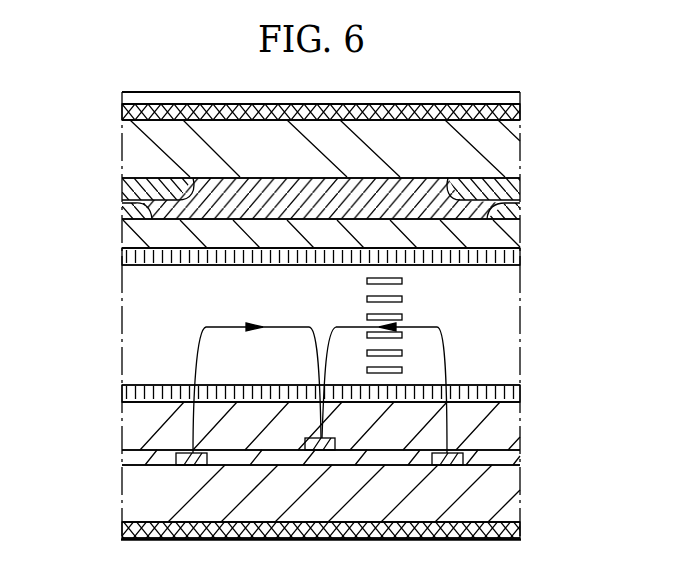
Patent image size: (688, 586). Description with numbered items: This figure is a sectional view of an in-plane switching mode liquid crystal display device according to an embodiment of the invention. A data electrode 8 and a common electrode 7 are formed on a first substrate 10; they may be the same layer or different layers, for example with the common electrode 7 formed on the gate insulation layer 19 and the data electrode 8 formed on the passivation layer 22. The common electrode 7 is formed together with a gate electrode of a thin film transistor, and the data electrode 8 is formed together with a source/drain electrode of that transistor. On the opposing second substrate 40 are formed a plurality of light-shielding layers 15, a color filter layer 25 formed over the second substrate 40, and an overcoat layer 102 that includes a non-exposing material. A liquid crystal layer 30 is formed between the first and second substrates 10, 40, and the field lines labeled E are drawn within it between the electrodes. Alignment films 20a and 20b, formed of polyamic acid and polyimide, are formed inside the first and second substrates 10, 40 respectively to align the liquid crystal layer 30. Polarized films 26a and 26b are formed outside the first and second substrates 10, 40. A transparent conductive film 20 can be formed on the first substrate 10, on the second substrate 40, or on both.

The transparent conductive film 20 is at (520, 97).
The polarized film 26b is at (122, 110).
The second substrate 40 is at (520, 142).
The light-shielding layer 15 is at (520, 190).
The color filter layer 25 is at (130, 207).
The overcoat layer 102 is at (520, 235).
The alignment film 20b is at (122, 255).
The liquid crystal layer 30 is at (518, 322).
The electric field line E is at (418, 327).
The alignment film 20a is at (122, 393).
The passivation layer 22 is at (520, 415).
The gate insulation layer 19 is at (122, 457).
The common electrode 7 is at (180, 465).
The data electrode 8 is at (320, 465).
The first substrate 10 is at (520, 493).
The polarized film 26a is at (122, 530).